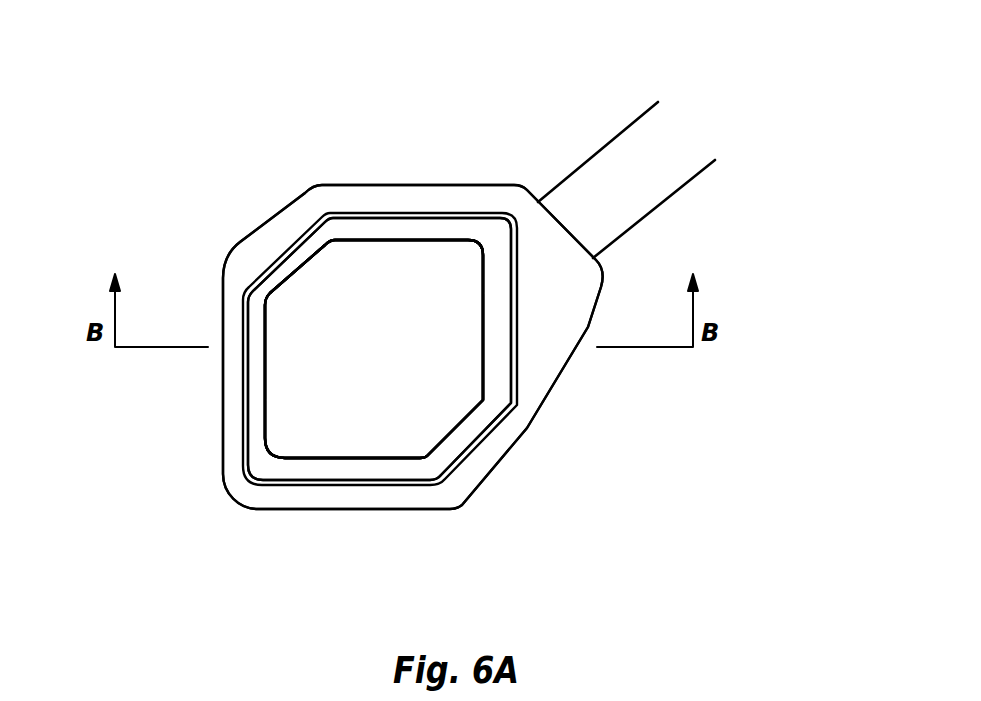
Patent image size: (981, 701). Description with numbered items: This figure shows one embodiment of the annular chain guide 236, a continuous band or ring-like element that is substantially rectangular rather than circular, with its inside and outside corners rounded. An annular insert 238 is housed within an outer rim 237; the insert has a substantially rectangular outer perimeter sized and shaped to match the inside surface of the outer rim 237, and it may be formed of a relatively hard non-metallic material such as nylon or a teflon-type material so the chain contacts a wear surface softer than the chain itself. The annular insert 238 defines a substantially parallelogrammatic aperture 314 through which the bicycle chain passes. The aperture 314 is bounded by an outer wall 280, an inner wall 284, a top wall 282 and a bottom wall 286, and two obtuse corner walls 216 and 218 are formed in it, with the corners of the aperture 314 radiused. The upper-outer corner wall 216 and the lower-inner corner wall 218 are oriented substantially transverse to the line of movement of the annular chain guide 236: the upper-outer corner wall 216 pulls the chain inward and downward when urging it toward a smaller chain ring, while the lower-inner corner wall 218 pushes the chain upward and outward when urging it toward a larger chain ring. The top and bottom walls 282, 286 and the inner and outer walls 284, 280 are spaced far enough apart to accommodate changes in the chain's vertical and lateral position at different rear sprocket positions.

The annular chain guide 236 is at (311, 118).
The outer rim 237 is at (412, 497).
The lower-inner corner wall 218 is at (440, 443).
The annular insert 238 is at (288, 467).
The bottom wall 286 is at (360, 462).
The outer wall 280 is at (263, 407).
The inner wall 284 is at (483, 360).
The top wall 282 is at (452, 243).
The upper-outer corner wall 216 is at (295, 268).
The aperture 314 is at (395, 265).